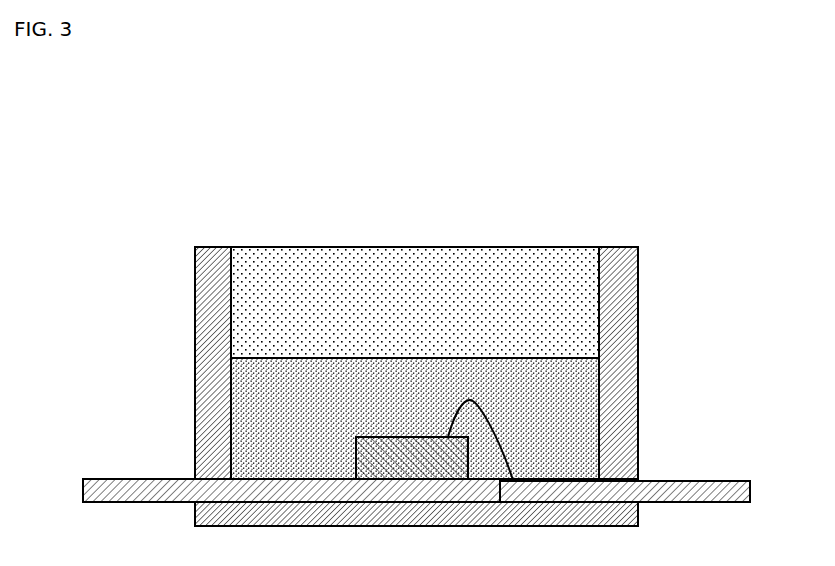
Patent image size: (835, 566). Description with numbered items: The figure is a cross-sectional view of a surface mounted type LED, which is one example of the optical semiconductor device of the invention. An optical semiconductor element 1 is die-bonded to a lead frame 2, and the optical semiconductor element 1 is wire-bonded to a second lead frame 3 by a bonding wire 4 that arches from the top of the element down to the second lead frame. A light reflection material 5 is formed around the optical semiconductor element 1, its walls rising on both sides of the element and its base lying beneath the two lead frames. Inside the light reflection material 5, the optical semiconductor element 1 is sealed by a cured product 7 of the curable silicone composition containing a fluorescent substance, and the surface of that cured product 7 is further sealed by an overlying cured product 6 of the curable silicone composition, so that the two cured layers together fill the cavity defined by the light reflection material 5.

The optical semiconductor element 1 is at (410, 437).
The lead frame 2 is at (167, 480).
The lead frame 3 is at (710, 482).
The bonding wire 4 is at (492, 412).
The light reflection material 5 is at (639, 285).
The cured product 6 is at (495, 277).
The cured product containing a fluorescent substance 7 is at (345, 415).